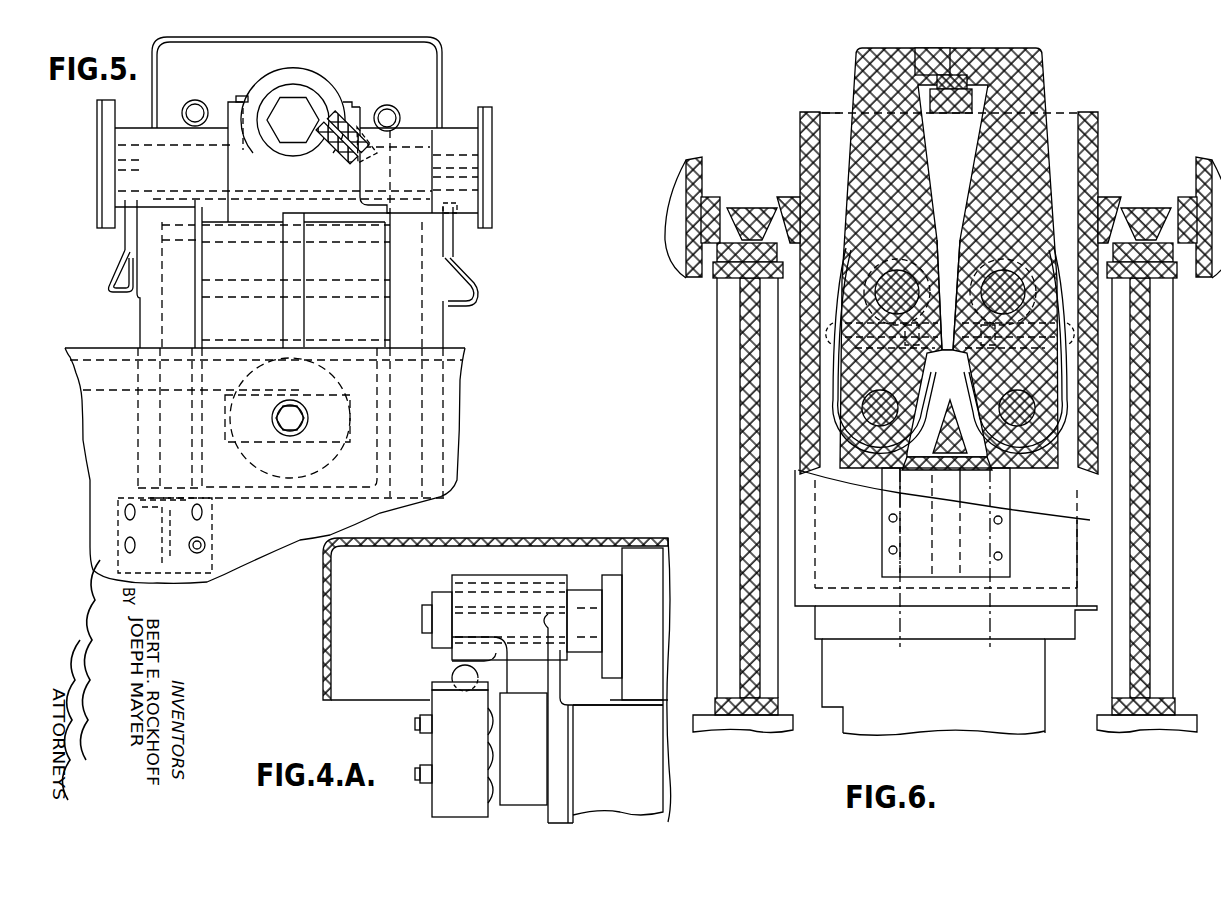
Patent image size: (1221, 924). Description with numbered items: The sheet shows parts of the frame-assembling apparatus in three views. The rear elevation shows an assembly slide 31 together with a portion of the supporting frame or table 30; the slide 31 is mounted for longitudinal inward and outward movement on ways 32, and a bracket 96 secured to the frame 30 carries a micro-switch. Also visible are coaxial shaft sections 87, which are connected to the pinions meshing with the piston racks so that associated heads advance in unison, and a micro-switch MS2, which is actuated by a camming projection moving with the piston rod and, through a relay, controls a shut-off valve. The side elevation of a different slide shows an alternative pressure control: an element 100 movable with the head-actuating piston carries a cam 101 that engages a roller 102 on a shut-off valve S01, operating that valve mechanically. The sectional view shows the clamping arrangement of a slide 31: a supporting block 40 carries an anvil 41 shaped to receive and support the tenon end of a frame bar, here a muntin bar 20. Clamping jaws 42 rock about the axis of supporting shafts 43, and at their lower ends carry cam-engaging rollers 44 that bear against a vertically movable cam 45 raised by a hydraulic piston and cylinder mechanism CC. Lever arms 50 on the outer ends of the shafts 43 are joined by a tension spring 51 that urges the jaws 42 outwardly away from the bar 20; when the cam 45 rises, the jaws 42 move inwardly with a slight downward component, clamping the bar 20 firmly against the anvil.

In FIG. 5, the micro-switch MS2 is at (366, 145).
In FIG. 5, the coaxial shaft sections 87 is at (452, 128).
In FIG. 5, the ways 32 is at (472, 286).
In FIG. 6, the ways 32 is at (749, 208).
In FIG. 5, the bracket 96 is at (213, 541).
In FIG. 4A, the element 100 is at (578, 595).
In FIG. 4A, the cam 101 is at (452, 664).
In FIG. 4A, the roller 102 is at (452, 679).
In FIG. 4A, the shut-off valve S01 is at (440, 752).
In FIG. 6, the muntin bar 20 is at (935, 44).
In FIG. 6, the assembly slide 31 is at (692, 172).
In FIG. 6, the platform or table 30 is at (716, 455).
In FIG. 6, the supporting block 40 is at (973, 102).
In FIG. 6, the anvil 41 is at (985, 80).
In FIG. 6, the clamping jaws 42 is at (1043, 54).
In FIG. 6, the lever arms 50 is at (1100, 302).
In FIG. 6, the supporting shafts 43 is at (1075, 326).
In FIG. 6, the cam-engaging rollers 44 is at (1080, 413).
In FIG. 6, the tension spring 51 is at (944, 309).
In FIG. 6, the cam 45 is at (947, 410).
In FIG. 6, the hydraulic piston and cylinder mechanism CC is at (1044, 698).